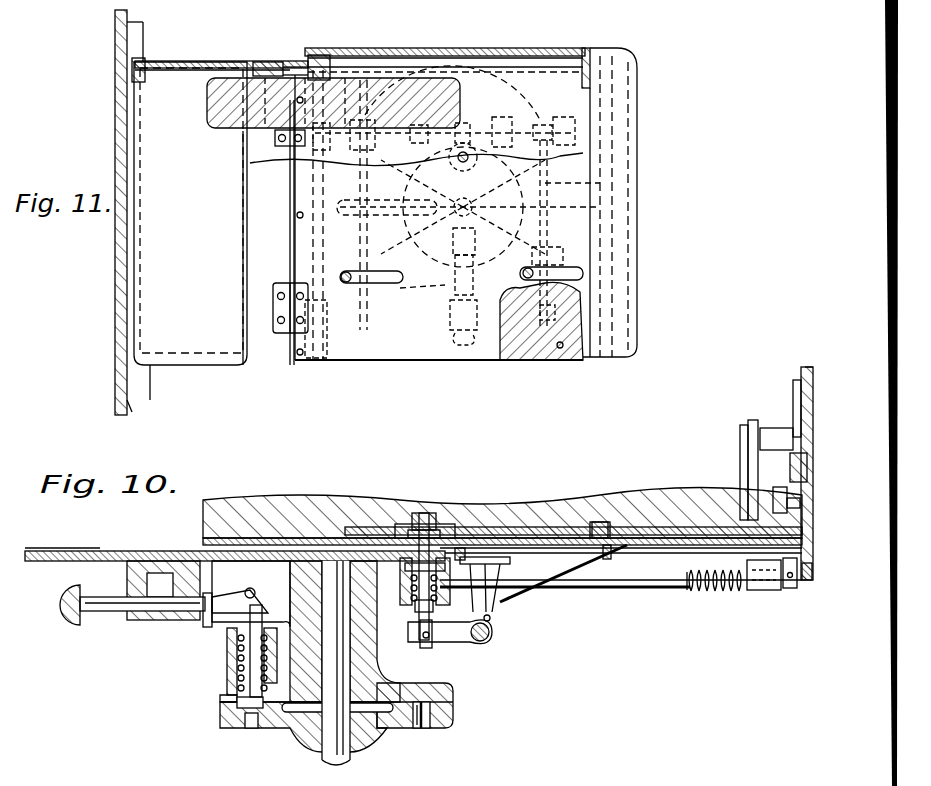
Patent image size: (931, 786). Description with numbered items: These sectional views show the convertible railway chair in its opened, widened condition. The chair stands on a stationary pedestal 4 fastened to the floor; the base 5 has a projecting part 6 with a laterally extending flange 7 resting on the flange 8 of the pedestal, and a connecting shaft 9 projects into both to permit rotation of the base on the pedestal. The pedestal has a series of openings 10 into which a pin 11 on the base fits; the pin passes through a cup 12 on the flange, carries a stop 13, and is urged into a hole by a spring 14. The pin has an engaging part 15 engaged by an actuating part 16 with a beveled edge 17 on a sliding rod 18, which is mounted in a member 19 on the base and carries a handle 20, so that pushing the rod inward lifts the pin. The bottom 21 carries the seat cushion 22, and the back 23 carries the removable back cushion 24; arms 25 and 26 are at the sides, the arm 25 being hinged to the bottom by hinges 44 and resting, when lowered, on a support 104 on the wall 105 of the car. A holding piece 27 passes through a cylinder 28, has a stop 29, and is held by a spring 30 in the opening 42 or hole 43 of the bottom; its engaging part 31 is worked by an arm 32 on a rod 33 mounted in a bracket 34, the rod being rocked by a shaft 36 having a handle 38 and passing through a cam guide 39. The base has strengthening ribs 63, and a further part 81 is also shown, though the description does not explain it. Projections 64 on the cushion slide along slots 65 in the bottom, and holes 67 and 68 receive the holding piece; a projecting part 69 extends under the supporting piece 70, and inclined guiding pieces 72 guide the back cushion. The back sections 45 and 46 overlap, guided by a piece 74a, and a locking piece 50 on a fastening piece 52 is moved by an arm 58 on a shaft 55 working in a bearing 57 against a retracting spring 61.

In FIG. 10, the pedestal 4 is at (372, 742).
In FIG. 11, the base 5 is at (525, 345).
In FIG. 10, the base 5 is at (52, 561).
In FIG. 10, the projecting part 6 is at (376, 660).
In FIG. 10, the flange 7 is at (453, 700).
In FIG. 10, the flange of the pedestal 8 is at (440, 725).
In FIG. 11, the connecting piece or shaft 9 is at (420, 227).
In FIG. 10, the connecting piece or shaft 9 is at (343, 763).
In FIG. 10, the openings 10 is at (425, 725).
In FIG. 10, the pin 11 is at (240, 720).
In FIG. 10, the cup 12 is at (230, 660).
In FIG. 10, the stop 13 is at (236, 707).
In FIG. 10, the spring 14 is at (230, 680).
In FIG. 10, the engaging part 15 is at (254, 591).
In FIG. 10, the actuating part 16 is at (220, 614).
In FIG. 10, the beveled edge 17 is at (232, 600).
In FIG. 10, the sliding rod 18 is at (115, 612).
In FIG. 10, the member 19 is at (145, 561).
In FIG. 11, the handle 20 is at (465, 345).
In FIG. 10, the handle 20 is at (72, 618).
In FIG. 11, the bottom 21 is at (405, 360).
In FIG. 10, the bottom 21 is at (205, 543).
In FIG. 11, the seat cushion 22 is at (275, 168).
In FIG. 10, the seat cushion 22 is at (272, 500).
In FIG. 11, the back 23 is at (445, 49).
In FIG. 10, the back 23 is at (794, 349).
In FIG. 11, the back cushion 24 is at (210, 113).
In FIG. 11, the arm 25 is at (243, 367).
In FIG. 11, the arm 26 is at (640, 305).
In FIG. 10, the holding piece 27 is at (428, 530).
In FIG. 10, the cylinder 28 is at (405, 598).
In FIG. 10, the stop 29 is at (410, 560).
In FIG. 10, the spring 30 is at (498, 593).
In FIG. 10, the engaging part 31 is at (428, 640).
In FIG. 10, the arm 32 is at (462, 642).
In FIG. 11, the rod 33 is at (478, 133).
In FIG. 10, the rod 33 is at (490, 637).
In FIG. 10, the bracket 34 is at (490, 610).
In FIG. 11, the shaft 36 is at (600, 183).
In FIG. 11, the handle 38 is at (545, 320).
In FIG. 11, the cam guide 39 is at (550, 256).
In FIG. 10, the opening 42 is at (607, 560).
In FIG. 10, the hole 43 is at (422, 520).
In FIG. 11, the hinges 44 is at (275, 143).
In FIG. 11, the back section 45 is at (456, 50).
In FIG. 10, the back section 45 is at (805, 367).
In FIG. 11, the back section 46 is at (258, 62).
In FIG. 10, the back section 46 is at (793, 382).
In FIG. 10, the locking piece 50 is at (800, 590).
In FIG. 10, the fastening piece 52 is at (795, 502).
In FIG. 11, the shaft 55 is at (368, 205).
In FIG. 10, the shaft 55 is at (642, 588).
In FIG. 10, the bearing 57 is at (760, 592).
In FIG. 10, the arm 58 is at (790, 590).
In FIG. 10, the retracting spring 61 is at (703, 592).
In FIG. 11, the strengthening ribs 63 is at (410, 262).
In FIG. 10, the strengthening ribs 63 is at (250, 620).
In FIG. 11, the projections 64 is at (346, 272).
In FIG. 11, the slots 65 is at (380, 285).
In FIG. 10, the hole 67 is at (598, 522).
In FIG. 10, the hole 68 is at (440, 532).
In FIG. 10, the projecting part 69 is at (733, 535).
In FIG. 10, the supporting piece 70 is at (745, 440).
In FIG. 11, the guiding pieces 72 is at (272, 70).
In FIG. 10, the guiding pieces 72 is at (753, 420).
In FIG. 10, the guide piece 74a is at (790, 465).
In FIG. 11, the strip 81 is at (350, 362).
In FIG. 10, the strip 81 is at (70, 550).
In FIG. 11, the support 104 is at (150, 387).
In FIG. 11, the wall 105 is at (118, 325).